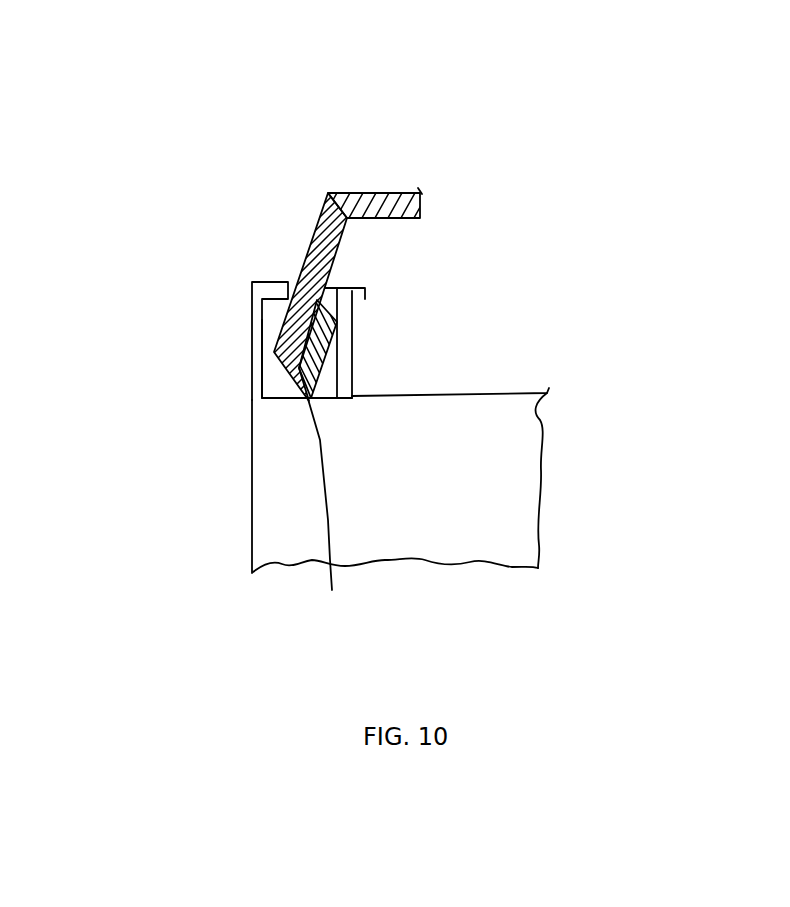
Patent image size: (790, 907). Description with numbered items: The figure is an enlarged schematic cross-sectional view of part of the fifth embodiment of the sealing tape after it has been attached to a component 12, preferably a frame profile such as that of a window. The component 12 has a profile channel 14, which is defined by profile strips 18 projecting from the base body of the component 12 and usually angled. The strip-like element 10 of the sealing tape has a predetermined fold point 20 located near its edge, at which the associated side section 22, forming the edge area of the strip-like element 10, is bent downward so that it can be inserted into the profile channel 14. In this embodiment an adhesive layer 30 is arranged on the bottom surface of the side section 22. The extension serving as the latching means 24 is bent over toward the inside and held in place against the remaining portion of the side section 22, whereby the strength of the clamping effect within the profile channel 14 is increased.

The strip-like element 10 is at (376, 205).
The component 12 is at (502, 497).
The profile channel 14 is at (274, 391).
The profile strip 18 is at (252, 340).
The predetermined fold point 20 is at (329, 192).
The side section 22 is at (302, 250).
The latching means 24 is at (331, 514).
The adhesive layer 30 is at (288, 303).